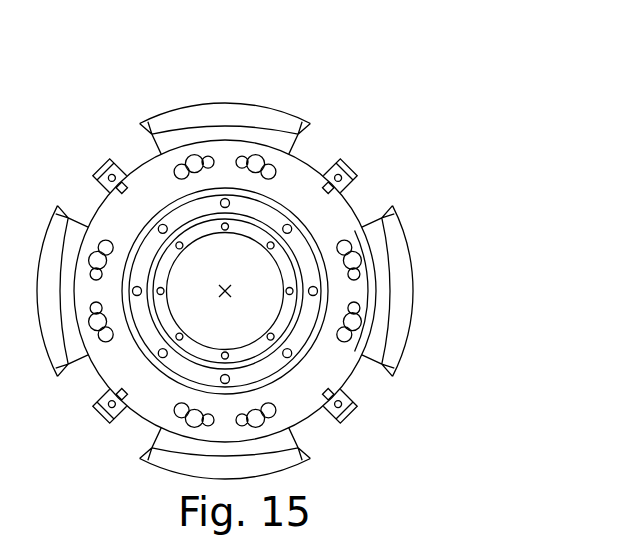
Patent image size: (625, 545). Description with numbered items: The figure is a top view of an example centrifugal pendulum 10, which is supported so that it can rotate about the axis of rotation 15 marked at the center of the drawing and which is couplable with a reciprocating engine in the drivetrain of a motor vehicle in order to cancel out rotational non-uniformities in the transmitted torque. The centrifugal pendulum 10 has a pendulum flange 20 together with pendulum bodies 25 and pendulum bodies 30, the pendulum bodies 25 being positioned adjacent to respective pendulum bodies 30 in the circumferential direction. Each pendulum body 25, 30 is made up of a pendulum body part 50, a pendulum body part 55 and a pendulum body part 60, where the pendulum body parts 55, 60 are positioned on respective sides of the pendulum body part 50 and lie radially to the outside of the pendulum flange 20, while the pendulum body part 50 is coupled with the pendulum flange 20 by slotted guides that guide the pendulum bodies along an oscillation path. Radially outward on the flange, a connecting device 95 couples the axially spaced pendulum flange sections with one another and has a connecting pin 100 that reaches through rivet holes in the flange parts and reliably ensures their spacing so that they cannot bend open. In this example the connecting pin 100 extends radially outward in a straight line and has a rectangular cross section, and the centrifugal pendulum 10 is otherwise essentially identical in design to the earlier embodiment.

The centrifugal pendulum 10 is at (402, 90).
The axis of rotation 15 is at (232, 292).
The pendulum flange 20 is at (343, 197).
The pendulum body 25 is at (258, 85).
The pendulum body 30 is at (408, 371).
The pendulum body part 50 is at (288, 128).
The pendulum body part 55 is at (260, 134).
The pendulum body part 60 is at (225, 291).
The connecting device 95 is at (345, 149).
The connecting pin 100 is at (350, 167).